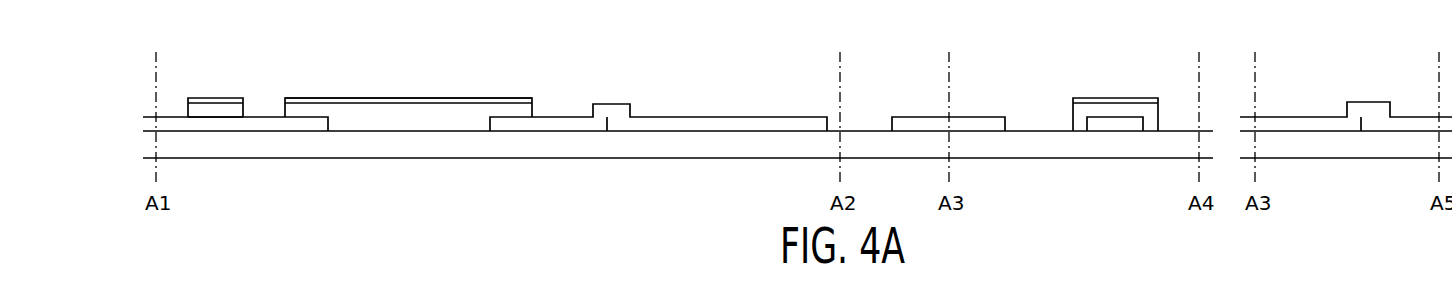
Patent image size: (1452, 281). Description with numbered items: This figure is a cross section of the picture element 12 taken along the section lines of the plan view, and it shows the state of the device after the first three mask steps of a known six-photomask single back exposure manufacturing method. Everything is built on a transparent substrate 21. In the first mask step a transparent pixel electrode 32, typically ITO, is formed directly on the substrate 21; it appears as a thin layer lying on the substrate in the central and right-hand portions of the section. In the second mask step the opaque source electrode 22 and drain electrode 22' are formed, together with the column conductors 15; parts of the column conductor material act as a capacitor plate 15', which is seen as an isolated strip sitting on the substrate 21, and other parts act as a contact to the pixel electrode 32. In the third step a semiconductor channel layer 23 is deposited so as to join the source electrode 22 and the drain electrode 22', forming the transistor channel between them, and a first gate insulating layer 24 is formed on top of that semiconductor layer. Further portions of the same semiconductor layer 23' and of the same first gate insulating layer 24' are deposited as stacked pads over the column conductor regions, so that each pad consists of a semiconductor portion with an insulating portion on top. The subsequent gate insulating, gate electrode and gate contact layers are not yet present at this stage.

The picture element 12 is at (727, 87).
The column conductors 15 is at (235, 87).
The capacitor plate 15' is at (950, 87).
The transparent substrate 21 is at (727, 142).
The source electrode 22 is at (408, 84).
The drain electrode 22' is at (658, 87).
The semiconductor channel layer 23 is at (408, 81).
The semiconductor channel layer 23' is at (670, 87).
The first gate insulating layer 24 is at (408, 73).
The first gate insulating layer 24' is at (673, 87).
The transparent pixel electrode 32 is at (649, 127).